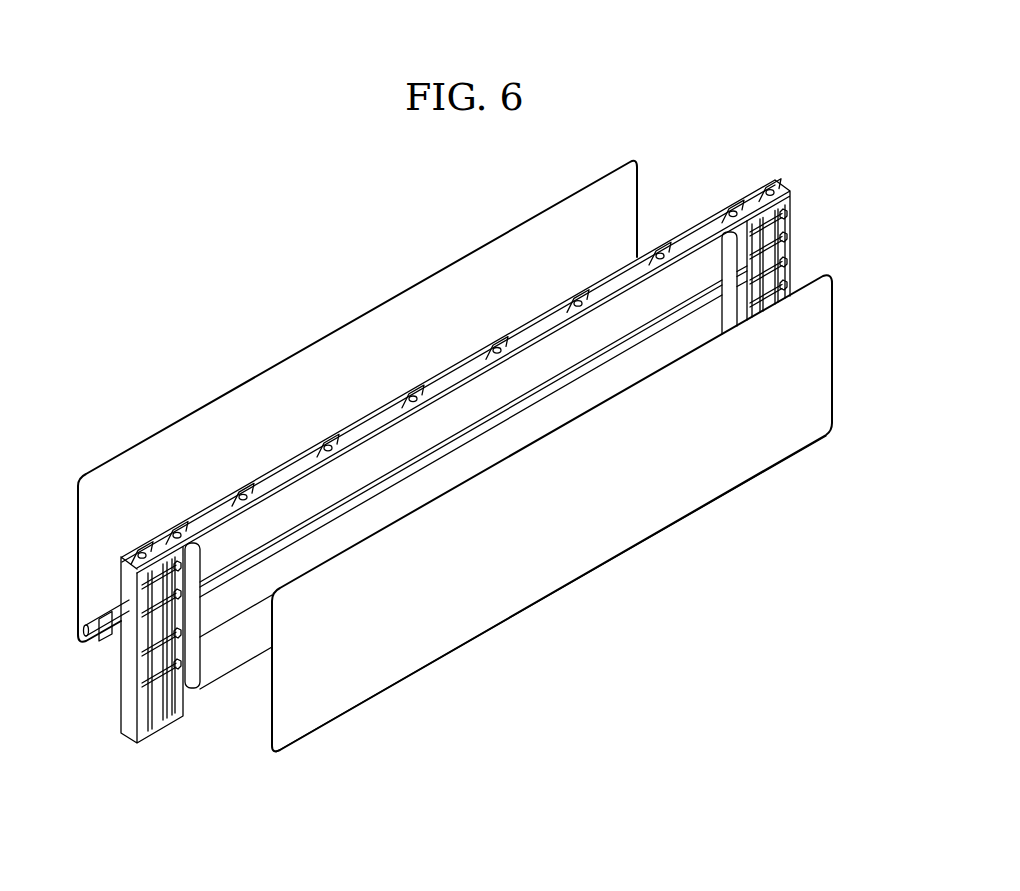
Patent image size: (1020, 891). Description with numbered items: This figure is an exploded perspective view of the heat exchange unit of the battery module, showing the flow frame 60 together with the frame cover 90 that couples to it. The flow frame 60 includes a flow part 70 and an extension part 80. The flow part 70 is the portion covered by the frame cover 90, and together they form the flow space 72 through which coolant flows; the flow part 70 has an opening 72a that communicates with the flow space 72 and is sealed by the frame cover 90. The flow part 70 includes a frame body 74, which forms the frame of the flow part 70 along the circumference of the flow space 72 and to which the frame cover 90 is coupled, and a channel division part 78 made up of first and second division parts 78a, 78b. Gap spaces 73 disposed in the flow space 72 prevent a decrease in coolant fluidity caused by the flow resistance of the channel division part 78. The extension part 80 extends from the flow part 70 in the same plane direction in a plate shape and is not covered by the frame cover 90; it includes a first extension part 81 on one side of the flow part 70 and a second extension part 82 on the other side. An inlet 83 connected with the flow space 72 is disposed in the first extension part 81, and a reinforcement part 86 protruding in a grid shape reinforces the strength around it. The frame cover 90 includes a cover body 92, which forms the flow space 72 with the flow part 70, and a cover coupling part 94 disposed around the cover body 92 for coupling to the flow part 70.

The flow frame 60 is at (168, 741).
The flow part 70 is at (297, 448).
The flow space 72 is at (245, 543).
The opening 72a is at (728, 282).
The gap spaces 73 is at (178, 618).
The frame body 74 is at (391, 414).
The channel division part 78 is at (456, 372).
The first division part 78a is at (470, 407).
The second division part 78b is at (577, 362).
The extension part 80 is at (456, 474).
The first extension part 81 is at (152, 672).
The second extension part 82 is at (767, 288).
The inlet 83 is at (100, 615).
The reinforcement part 86 is at (147, 577).
The frame cover 90 is at (604, 549).
The cover body 92 is at (467, 626).
The cover coupling part 94 is at (272, 752).